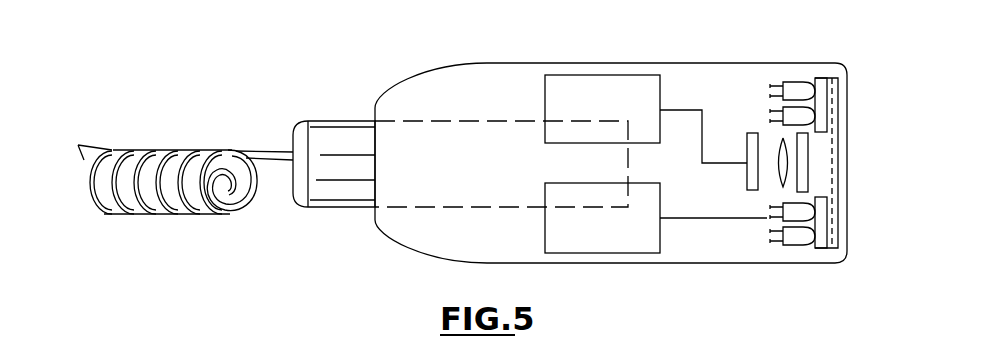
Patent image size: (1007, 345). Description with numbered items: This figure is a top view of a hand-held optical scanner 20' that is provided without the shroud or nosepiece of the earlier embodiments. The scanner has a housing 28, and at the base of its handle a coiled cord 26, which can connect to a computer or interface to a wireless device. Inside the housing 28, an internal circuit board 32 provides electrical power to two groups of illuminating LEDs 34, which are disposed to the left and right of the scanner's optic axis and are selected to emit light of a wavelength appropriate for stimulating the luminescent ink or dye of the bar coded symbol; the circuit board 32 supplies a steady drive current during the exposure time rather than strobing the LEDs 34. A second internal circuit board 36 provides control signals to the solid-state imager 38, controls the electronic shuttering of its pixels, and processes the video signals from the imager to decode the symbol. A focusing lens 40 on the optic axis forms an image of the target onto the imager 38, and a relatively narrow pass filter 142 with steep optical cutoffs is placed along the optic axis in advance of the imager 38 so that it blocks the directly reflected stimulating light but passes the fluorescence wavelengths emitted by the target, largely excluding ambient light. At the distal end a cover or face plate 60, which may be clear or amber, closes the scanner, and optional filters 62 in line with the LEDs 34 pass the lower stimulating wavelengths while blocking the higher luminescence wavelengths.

The hand-held optical scanner 20' is at (611, 138).
The coiled cord 26 is at (196, 214).
The housing 28 is at (684, 63).
The internal circuit board 32 is at (555, 236).
The illuminating LEDs 34 is at (795, 78).
The second internal circuit board 36 is at (555, 93).
The solid-state imager 38 is at (752, 133).
The focusing lens 40 is at (772, 184).
The cover or face plate 60 is at (848, 122).
The optional filters 62 is at (828, 78).
The narrow pass filter 142 is at (806, 178).